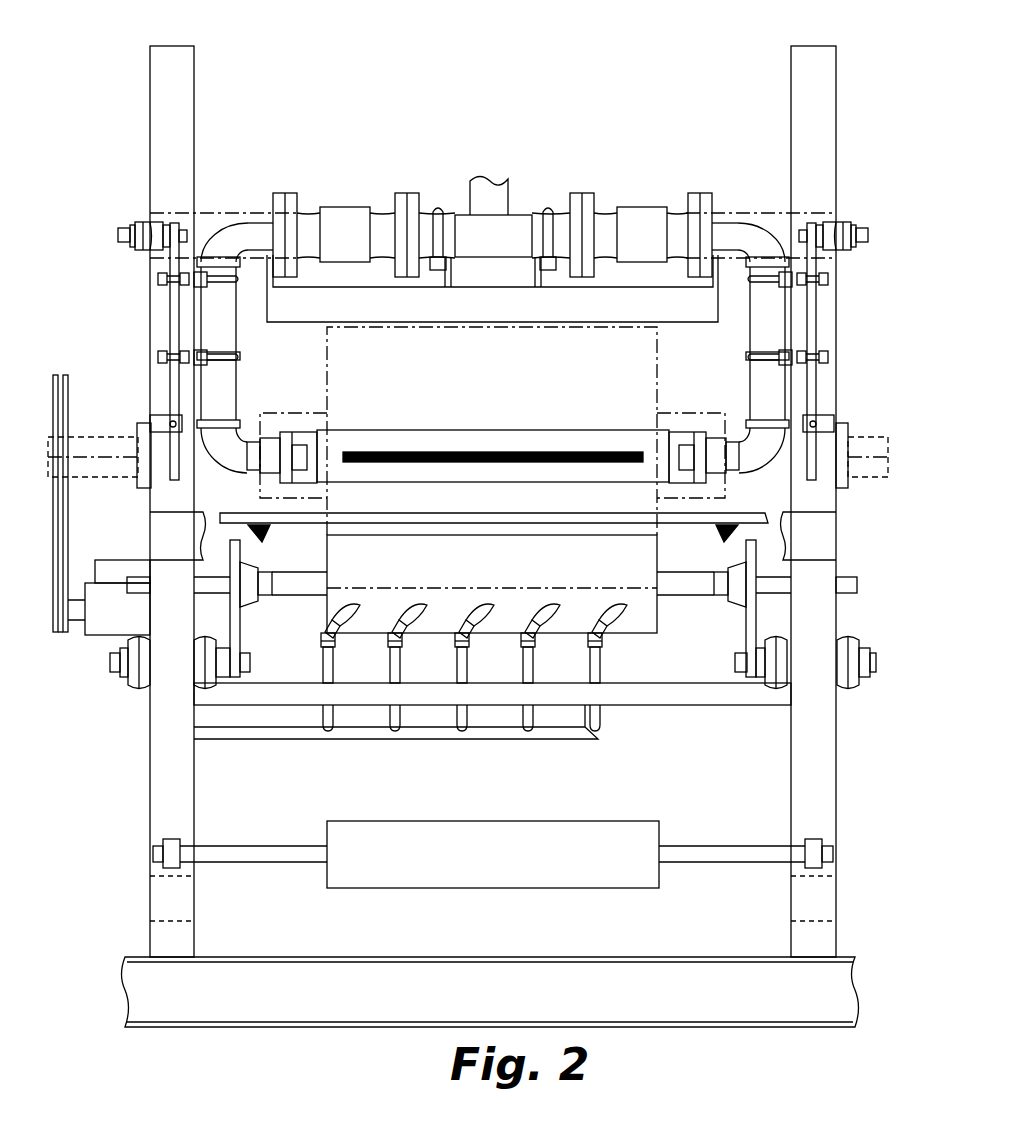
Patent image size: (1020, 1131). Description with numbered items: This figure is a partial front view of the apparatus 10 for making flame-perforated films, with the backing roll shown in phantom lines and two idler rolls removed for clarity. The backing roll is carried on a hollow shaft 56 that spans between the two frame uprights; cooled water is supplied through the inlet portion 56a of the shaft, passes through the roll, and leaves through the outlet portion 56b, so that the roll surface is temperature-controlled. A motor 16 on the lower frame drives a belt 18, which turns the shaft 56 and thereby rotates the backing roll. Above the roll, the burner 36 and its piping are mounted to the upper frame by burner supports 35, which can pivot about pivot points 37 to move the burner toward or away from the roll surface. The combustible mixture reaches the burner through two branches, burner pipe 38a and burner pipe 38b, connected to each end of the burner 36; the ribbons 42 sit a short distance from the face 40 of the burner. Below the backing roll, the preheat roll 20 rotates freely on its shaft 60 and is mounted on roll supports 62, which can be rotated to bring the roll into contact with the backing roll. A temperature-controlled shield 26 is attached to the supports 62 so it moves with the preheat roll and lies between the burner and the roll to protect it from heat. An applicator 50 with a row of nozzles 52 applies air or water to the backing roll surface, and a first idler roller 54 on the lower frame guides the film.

The apparatus 10 is at (370, 36).
The motor 16 is at (107, 626).
The belt 18 is at (62, 626).
The preheat roll 20 is at (643, 628).
The temperature-controlled shield 26 is at (760, 521).
The burner supports 35 is at (176, 323).
The burner 36 is at (316, 437).
The pivot points 37 is at (184, 233).
The burner pipe 38a is at (760, 339).
The burner pipe 38b is at (229, 332).
The face of the burner 40 is at (526, 449).
The ribbons 42 is at (453, 456).
The applicator 50 is at (255, 740).
The nozzles 52 is at (391, 716).
The first idler roller 54 is at (480, 840).
The hollow shaft 56 is at (871, 479).
The inlet portion 56a is at (861, 449).
The outlet portion 56b is at (113, 463).
The shaft 60 is at (138, 592).
The roll supports 62 is at (241, 639).